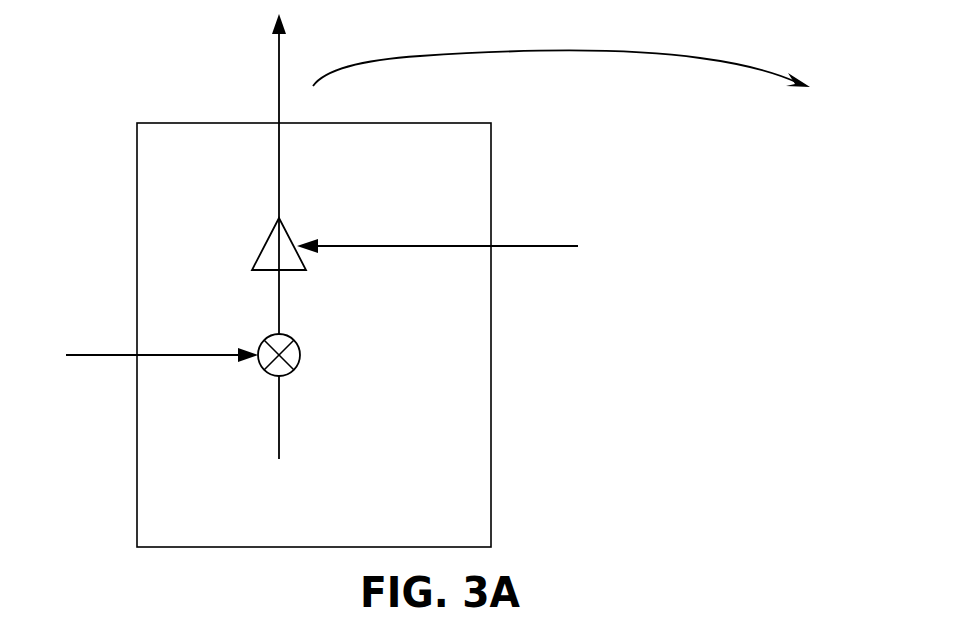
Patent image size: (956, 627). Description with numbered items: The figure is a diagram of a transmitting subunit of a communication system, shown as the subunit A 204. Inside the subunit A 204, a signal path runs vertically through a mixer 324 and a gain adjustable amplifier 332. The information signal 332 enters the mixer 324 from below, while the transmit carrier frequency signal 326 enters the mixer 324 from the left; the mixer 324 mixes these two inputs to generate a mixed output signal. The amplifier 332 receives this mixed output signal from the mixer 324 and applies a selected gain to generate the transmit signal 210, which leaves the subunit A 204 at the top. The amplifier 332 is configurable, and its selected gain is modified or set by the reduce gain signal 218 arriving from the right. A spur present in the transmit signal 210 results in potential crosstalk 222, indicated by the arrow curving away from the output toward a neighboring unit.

The subunit A 204 is at (332, 543).
The transmit signal 210 is at (279, 80).
The reduce gain signal 218 is at (499, 248).
The crosstalk 222 is at (509, 52).
The mixer 324 is at (294, 340).
The transmit carrier frequency signal 326 is at (120, 355).
The gain adjustable amplifier 332 is at (268, 243).